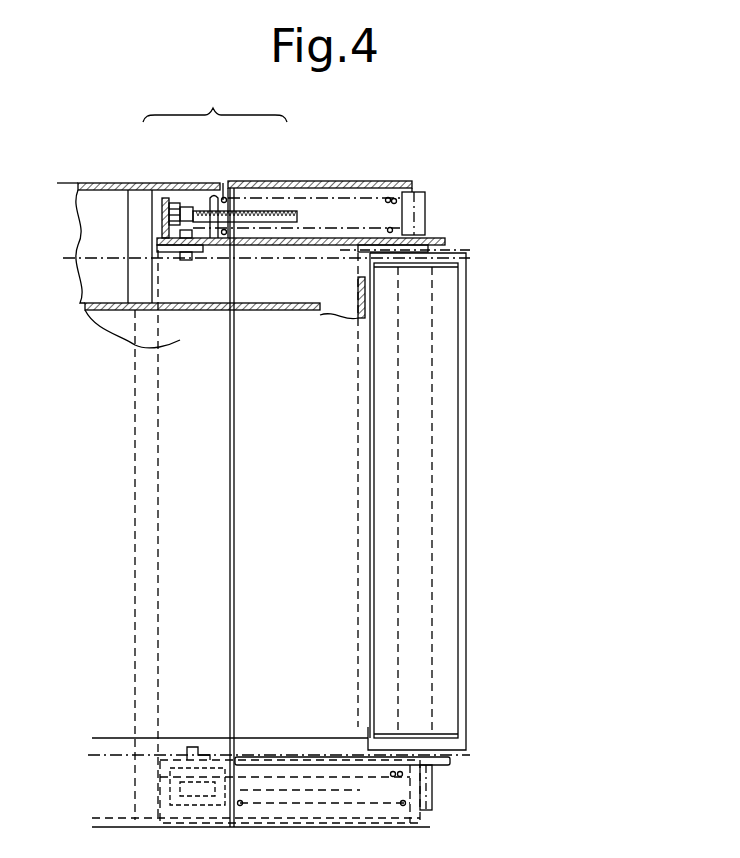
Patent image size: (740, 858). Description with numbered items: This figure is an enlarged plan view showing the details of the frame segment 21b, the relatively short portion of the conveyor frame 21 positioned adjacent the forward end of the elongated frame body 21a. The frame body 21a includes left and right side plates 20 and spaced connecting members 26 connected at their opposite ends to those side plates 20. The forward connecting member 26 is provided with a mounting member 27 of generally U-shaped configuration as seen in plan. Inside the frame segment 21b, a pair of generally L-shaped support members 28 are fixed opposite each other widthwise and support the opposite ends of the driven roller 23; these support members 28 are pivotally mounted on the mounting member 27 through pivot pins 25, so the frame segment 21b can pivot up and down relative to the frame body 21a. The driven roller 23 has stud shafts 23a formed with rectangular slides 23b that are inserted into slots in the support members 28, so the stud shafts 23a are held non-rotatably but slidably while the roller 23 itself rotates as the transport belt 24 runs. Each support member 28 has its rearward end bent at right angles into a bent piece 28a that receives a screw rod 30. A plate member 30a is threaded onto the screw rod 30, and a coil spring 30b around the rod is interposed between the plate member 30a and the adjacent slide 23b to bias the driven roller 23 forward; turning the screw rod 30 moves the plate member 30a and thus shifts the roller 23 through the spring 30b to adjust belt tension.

The side plate 20 is at (118, 183).
The conveyor frame 21 is at (215, 101).
The frame body 21a is at (150, 182).
The frame segment 21b is at (257, 181).
The driven roller 23 is at (457, 383).
The stud shaft 23a is at (420, 485).
The slide 23b is at (422, 205).
The transport belt 24 is at (468, 705).
The pivot pin 25 is at (185, 262).
The connecting member 26 is at (135, 620).
The mounting member 27 is at (168, 510).
The support member 28 is at (445, 241).
The bent piece 28a is at (155, 236).
The screw rod 30 is at (286, 208).
The plate member 30a is at (214, 196).
The coil spring 30b is at (389, 197).